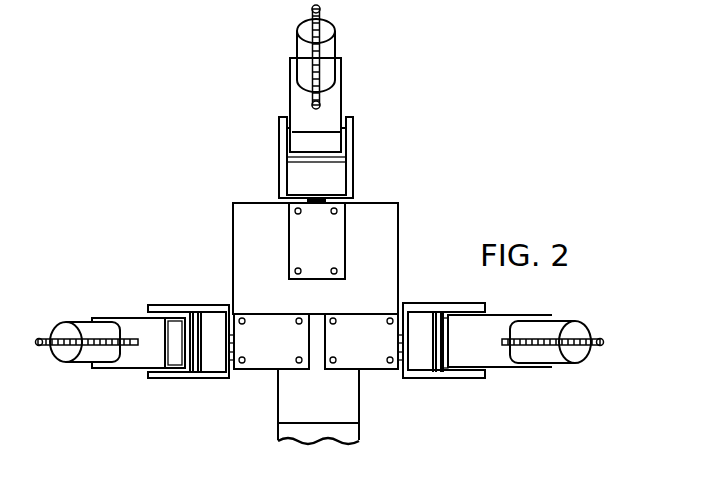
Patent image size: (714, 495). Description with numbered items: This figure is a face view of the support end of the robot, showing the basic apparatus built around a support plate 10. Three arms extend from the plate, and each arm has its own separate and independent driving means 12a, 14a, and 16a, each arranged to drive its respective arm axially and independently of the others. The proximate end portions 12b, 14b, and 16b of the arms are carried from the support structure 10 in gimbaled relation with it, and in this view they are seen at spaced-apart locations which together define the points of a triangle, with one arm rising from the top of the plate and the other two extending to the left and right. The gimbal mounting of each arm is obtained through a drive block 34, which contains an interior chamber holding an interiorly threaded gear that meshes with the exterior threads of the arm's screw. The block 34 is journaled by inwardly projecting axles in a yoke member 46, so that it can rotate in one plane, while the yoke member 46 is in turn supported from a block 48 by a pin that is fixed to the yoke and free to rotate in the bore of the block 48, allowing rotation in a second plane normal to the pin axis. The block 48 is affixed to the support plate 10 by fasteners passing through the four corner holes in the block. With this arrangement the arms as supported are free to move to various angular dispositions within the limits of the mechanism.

The support plate 10 is at (392, 218).
The driving means 12a is at (331, 53).
The proximate end portion 12b is at (322, 105).
The driving means 14a is at (78, 325).
The proximate end portion 14b is at (136, 338).
The driving means 16a is at (555, 327).
The proximate end portion 16b is at (597, 348).
The drive block 34 is at (292, 90).
The yoke member 46 is at (208, 312).
The block 48 is at (277, 312).